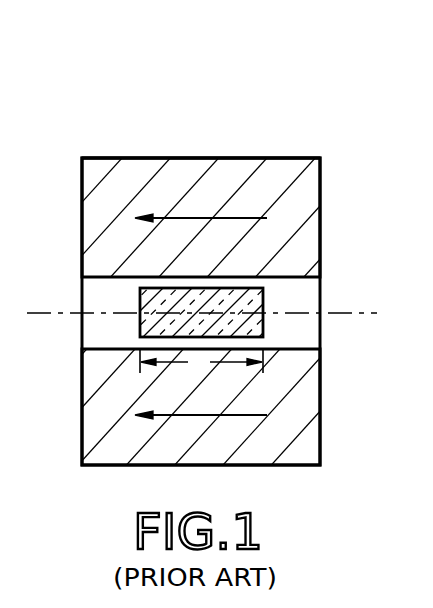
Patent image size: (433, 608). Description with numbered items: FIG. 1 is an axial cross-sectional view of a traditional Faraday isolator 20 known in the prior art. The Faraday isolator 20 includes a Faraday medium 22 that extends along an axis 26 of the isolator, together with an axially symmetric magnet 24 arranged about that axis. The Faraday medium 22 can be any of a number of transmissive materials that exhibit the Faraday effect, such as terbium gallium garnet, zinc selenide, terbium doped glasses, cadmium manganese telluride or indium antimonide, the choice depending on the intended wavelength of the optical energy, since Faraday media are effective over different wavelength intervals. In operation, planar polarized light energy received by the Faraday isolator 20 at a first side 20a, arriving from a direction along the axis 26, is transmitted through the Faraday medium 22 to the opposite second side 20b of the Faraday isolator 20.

The Faraday isolator 20 is at (208, 84).
The first side 20a is at (82, 191).
The second side 20b is at (320, 233).
The Faraday medium 22 is at (264, 316).
The axially symmetric magnet 24 is at (297, 158).
The axis 26 is at (97, 313).